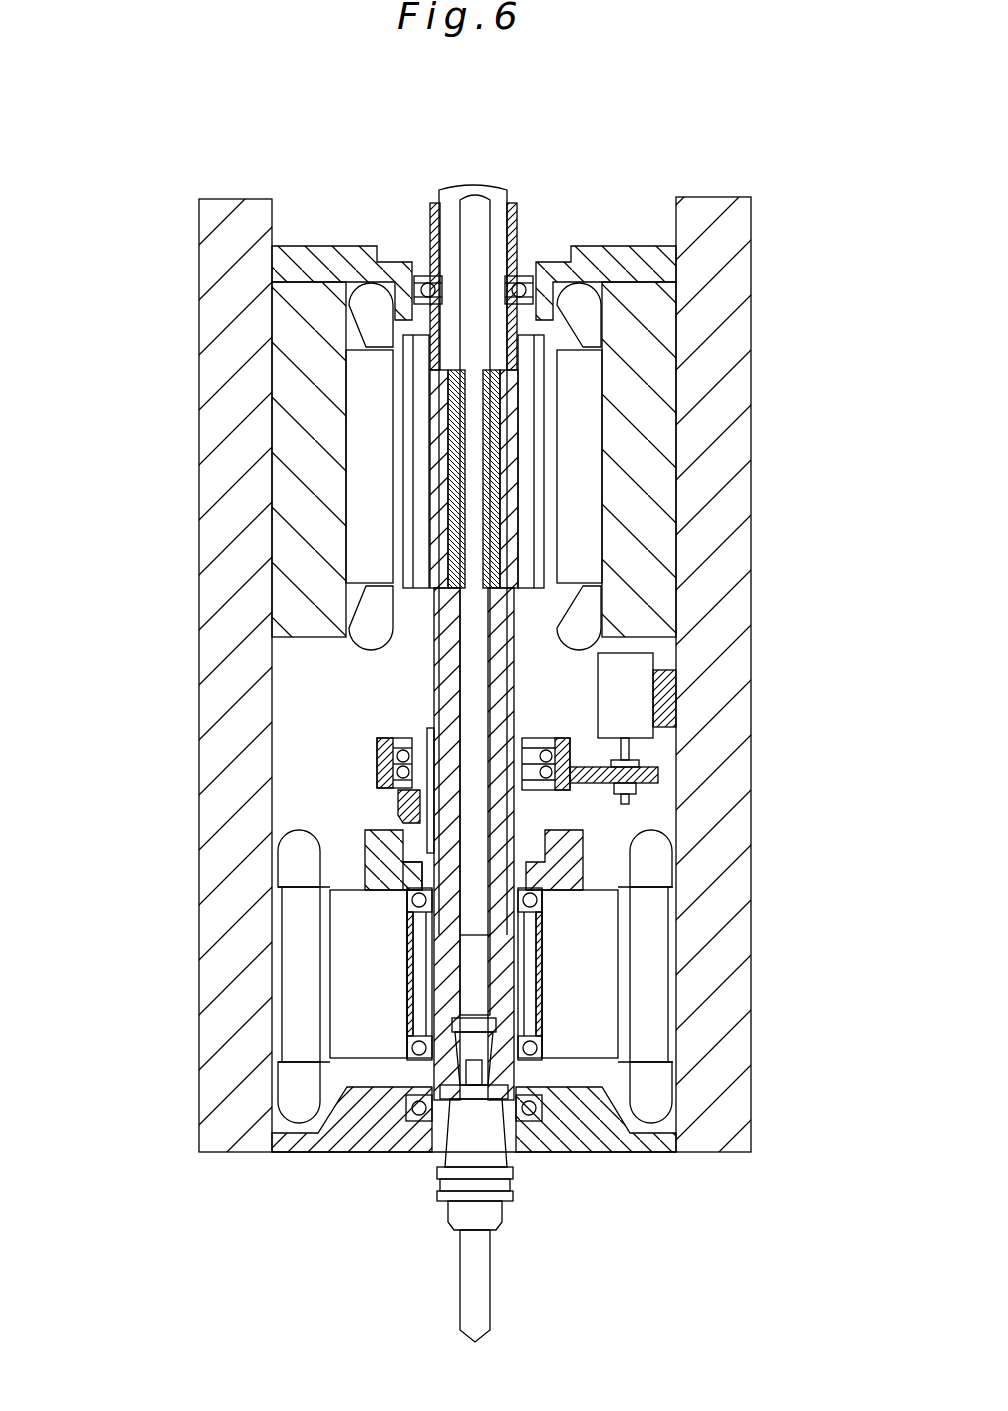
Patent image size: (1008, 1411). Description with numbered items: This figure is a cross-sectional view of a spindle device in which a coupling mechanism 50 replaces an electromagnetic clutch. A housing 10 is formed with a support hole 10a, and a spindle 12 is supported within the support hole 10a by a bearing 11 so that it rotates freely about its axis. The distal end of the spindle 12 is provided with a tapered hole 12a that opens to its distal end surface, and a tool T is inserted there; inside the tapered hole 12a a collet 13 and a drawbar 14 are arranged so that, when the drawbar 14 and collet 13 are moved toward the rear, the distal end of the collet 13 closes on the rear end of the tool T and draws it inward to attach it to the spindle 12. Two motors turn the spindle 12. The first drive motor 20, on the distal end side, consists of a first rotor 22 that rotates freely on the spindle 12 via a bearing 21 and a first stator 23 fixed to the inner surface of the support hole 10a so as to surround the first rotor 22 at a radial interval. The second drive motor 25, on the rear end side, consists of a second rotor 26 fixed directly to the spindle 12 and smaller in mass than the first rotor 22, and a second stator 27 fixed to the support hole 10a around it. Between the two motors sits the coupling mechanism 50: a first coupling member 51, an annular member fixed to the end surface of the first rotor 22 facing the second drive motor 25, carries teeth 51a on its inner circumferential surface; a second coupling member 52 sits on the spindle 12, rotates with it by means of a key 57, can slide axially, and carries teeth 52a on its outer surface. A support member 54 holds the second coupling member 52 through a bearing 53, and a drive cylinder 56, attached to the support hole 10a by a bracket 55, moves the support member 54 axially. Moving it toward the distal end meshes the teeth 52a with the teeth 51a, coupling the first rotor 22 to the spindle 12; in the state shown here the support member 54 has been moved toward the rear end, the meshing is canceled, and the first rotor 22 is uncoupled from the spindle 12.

The housing 10 is at (212, 1036).
The support hole 10a is at (290, 1002).
The bearing 11 is at (520, 288).
The spindle 12 is at (512, 1165).
The tapered hole 12a is at (490, 1137).
The collet 13 is at (440, 1070).
The drawbar 14 is at (488, 952).
The first drive motor 20 is at (490, 1019).
The bearing 21 is at (413, 900).
The first rotor 22 is at (373, 1050).
The first stator 23 is at (285, 1040).
The second drive motor 25 is at (490, 448).
The second rotor 26 is at (408, 425).
The second stator 27 is at (355, 450).
The coupling mechanism 50 is at (485, 764).
The first coupling member 51 is at (375, 865).
The teeth 51a is at (410, 860).
The second coupling member 52 is at (430, 742).
The teeth 52a is at (560, 797).
The bearing 53 is at (400, 745).
The support member 54 is at (655, 775).
The bracket 55 is at (665, 685).
The drive cylinder 56 is at (607, 697).
The key 57 is at (420, 798).
The tool T is at (455, 1215).